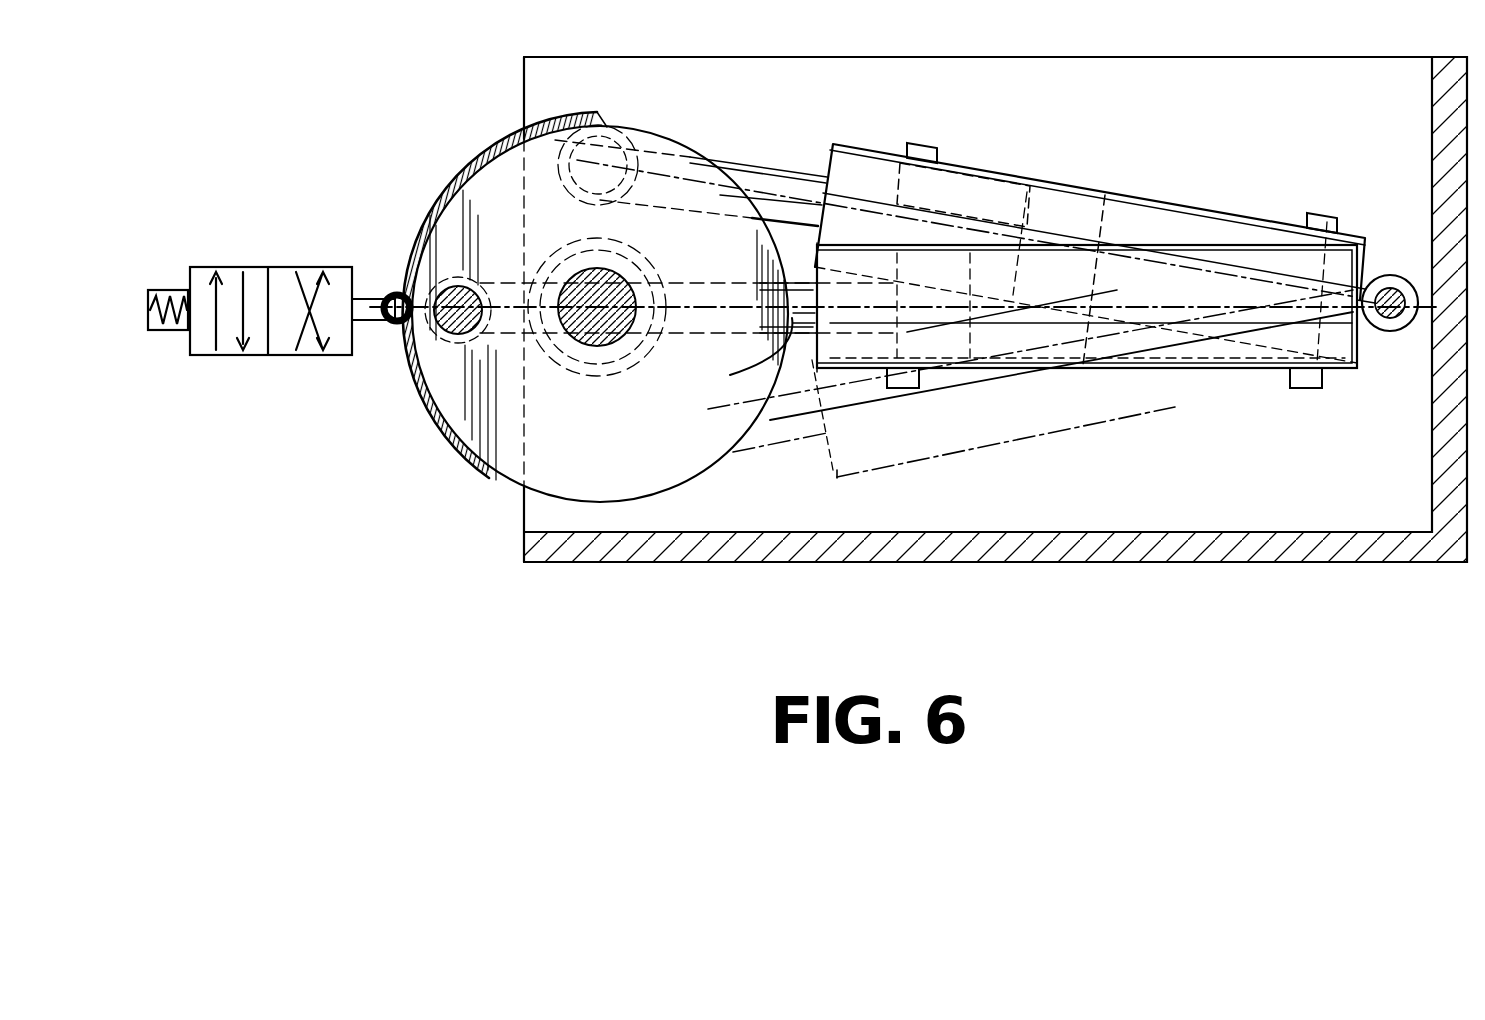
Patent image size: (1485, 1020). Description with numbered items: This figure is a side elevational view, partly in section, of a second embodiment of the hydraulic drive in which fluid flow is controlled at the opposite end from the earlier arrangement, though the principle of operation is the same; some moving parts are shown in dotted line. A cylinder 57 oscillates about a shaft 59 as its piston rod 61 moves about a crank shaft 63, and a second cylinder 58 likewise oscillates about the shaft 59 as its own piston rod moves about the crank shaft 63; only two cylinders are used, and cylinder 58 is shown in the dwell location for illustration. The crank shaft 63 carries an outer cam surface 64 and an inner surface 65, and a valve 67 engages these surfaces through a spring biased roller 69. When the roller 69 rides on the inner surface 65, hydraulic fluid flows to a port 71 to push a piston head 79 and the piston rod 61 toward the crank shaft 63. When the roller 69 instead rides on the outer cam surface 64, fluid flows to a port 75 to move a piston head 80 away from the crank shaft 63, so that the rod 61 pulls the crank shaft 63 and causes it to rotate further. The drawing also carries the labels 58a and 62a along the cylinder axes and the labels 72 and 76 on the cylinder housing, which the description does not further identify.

The cylinder 57 is at (1163, 205).
The cylinder 58 is at (798, 342).
The rod axis 58a is at (1028, 438).
The shaft 59 is at (1390, 290).
The piston rod 61 is at (962, 190).
The pivot axis 62a is at (790, 430).
The crank shaft 63 is at (540, 192).
The outer cam surface 64 is at (462, 168).
The inner surface 65 is at (445, 212).
The valve 67 is at (282, 355).
The spring biased roller 69 is at (393, 325).
The port 71 is at (1312, 212).
The stop 72 is at (1289, 388).
The port 75 is at (917, 142).
The stop 76 is at (887, 390).
The piston head 79 is at (1060, 200).
The piston head 80 is at (945, 372).